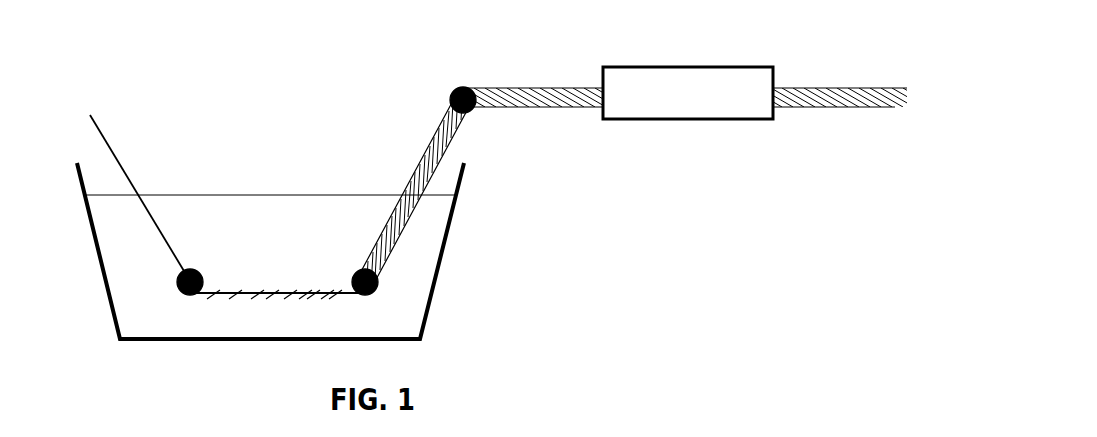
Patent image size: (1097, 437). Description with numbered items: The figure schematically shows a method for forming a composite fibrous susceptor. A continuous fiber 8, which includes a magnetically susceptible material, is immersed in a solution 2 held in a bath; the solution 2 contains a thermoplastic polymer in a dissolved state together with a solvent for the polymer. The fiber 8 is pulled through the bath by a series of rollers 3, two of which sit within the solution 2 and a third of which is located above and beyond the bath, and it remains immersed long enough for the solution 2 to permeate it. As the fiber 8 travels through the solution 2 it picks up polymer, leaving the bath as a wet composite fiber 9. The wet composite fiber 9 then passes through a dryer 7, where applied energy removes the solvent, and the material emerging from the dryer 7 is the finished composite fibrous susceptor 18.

The solution 2 is at (271, 243).
The rollers 3 is at (183, 296).
The dryer 7 is at (670, 67).
The continuous fiber 8 is at (103, 132).
The wet composite fiber 9 is at (412, 172).
The composite fibrous susceptor 18 is at (812, 88).